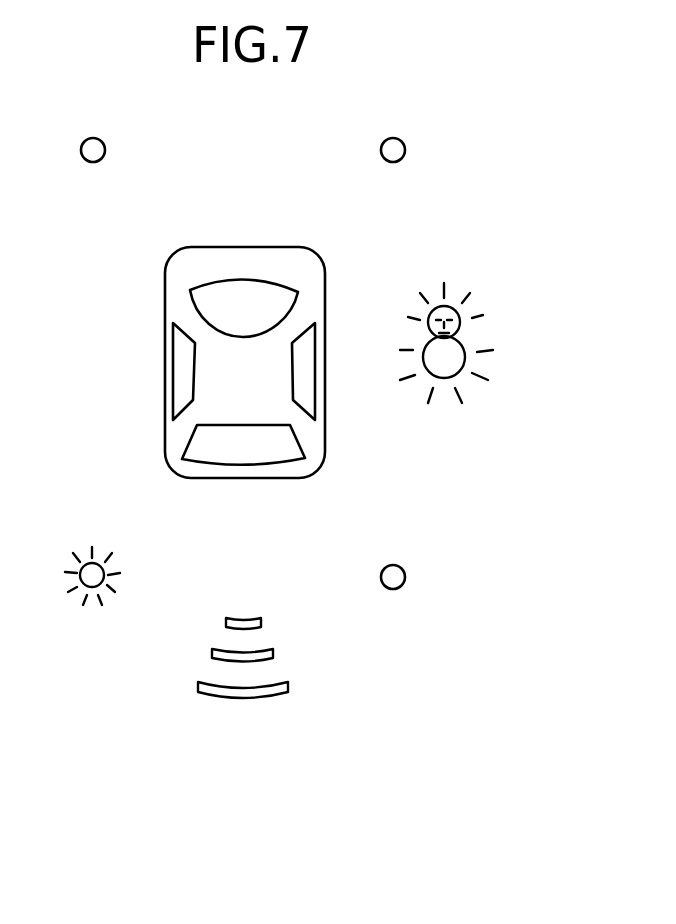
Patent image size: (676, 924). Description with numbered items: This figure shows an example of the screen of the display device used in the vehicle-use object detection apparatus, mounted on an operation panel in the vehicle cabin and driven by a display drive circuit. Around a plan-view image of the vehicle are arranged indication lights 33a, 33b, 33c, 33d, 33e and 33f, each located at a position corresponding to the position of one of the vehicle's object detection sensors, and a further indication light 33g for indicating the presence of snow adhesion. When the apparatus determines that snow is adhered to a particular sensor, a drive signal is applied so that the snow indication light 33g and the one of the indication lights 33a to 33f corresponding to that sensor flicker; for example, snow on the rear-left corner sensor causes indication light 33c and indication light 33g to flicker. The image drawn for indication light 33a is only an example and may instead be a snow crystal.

The indication light 33a is at (92, 138).
The indication light 33b is at (390, 138).
The indication light 33c is at (85, 587).
The indication light 33d is at (403, 585).
The indication light 33e is at (270, 688).
The indication light 33f is at (240, 702).
The indication light for indication of presence of snow adhesion 33g is at (467, 348).